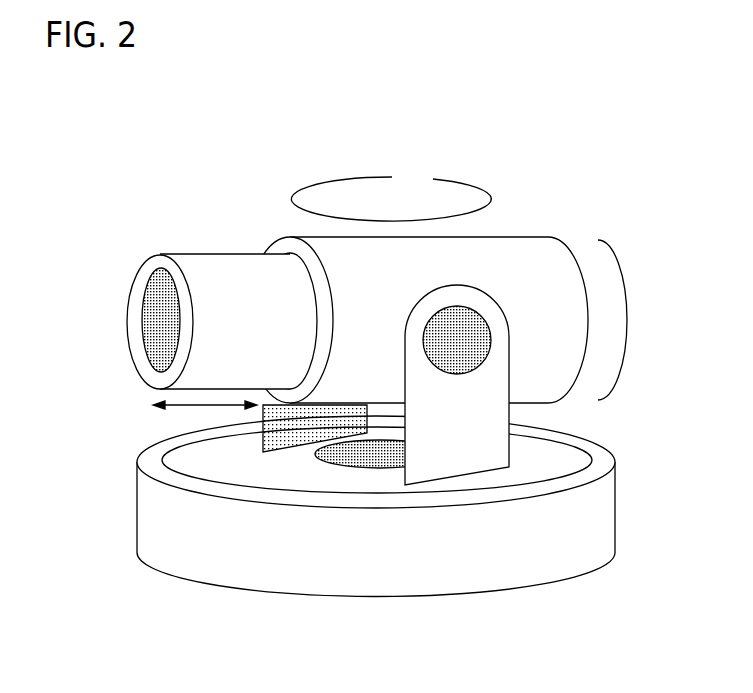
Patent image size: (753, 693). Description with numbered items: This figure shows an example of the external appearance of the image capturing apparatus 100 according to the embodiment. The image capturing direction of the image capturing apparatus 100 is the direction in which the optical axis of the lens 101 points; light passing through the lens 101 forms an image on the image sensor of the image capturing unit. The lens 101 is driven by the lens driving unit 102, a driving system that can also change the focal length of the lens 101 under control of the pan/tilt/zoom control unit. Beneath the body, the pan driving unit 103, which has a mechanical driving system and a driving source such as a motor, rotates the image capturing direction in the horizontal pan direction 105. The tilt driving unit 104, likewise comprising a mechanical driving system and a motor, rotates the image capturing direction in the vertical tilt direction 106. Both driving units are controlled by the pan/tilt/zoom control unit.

The image capturing apparatus 100 is at (527, 248).
The lens 101 is at (155, 318).
The lens driving unit 102 is at (218, 263).
The pan driving unit 103 is at (370, 465).
The tilt driving unit 104 is at (442, 337).
The pan direction 105 is at (332, 182).
The tilt direction 106 is at (636, 320).